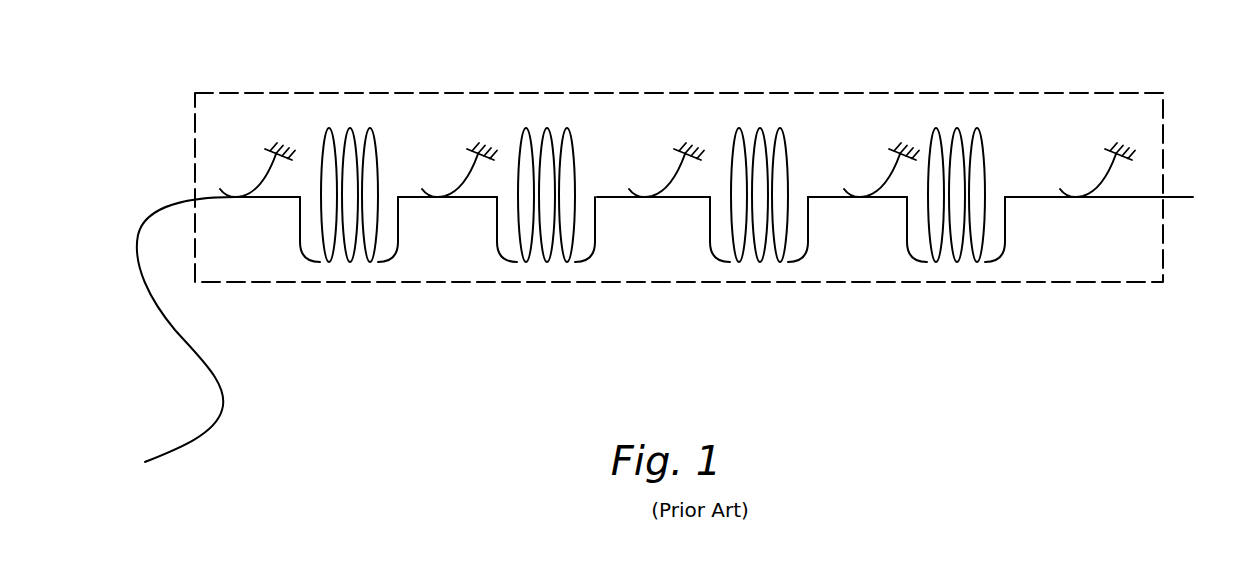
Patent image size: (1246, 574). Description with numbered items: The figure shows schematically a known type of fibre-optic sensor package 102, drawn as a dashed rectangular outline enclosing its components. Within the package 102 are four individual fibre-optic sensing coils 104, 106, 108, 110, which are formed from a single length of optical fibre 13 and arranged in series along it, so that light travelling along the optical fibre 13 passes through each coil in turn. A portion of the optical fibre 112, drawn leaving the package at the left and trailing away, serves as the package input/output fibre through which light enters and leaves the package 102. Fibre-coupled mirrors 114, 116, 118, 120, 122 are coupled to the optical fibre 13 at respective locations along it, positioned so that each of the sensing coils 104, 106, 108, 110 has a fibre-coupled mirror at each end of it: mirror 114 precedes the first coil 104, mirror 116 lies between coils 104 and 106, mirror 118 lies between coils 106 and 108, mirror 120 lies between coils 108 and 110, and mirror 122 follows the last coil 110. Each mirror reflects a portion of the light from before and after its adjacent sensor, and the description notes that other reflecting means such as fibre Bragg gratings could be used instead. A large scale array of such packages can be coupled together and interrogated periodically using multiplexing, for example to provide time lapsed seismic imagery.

The optical fibre 13 is at (1183, 197).
The fibre-optic sensor package 102 is at (1072, 282).
The fibre-optic sensing coil 104 is at (358, 126).
The fibre-optic sensing coil 106 is at (552, 126).
The fibre-optic sensing coil 108 is at (762, 126).
The fibre-optic sensing coil 110 is at (978, 126).
The input/output fibre 112 is at (160, 323).
The fibre-coupled mirror 114 is at (277, 140).
The fibre-coupled mirror 116 is at (480, 140).
The fibre-coupled mirror 118 is at (688, 140).
The fibre-coupled mirror 120 is at (903, 140).
The fibre-coupled mirror 122 is at (1128, 140).